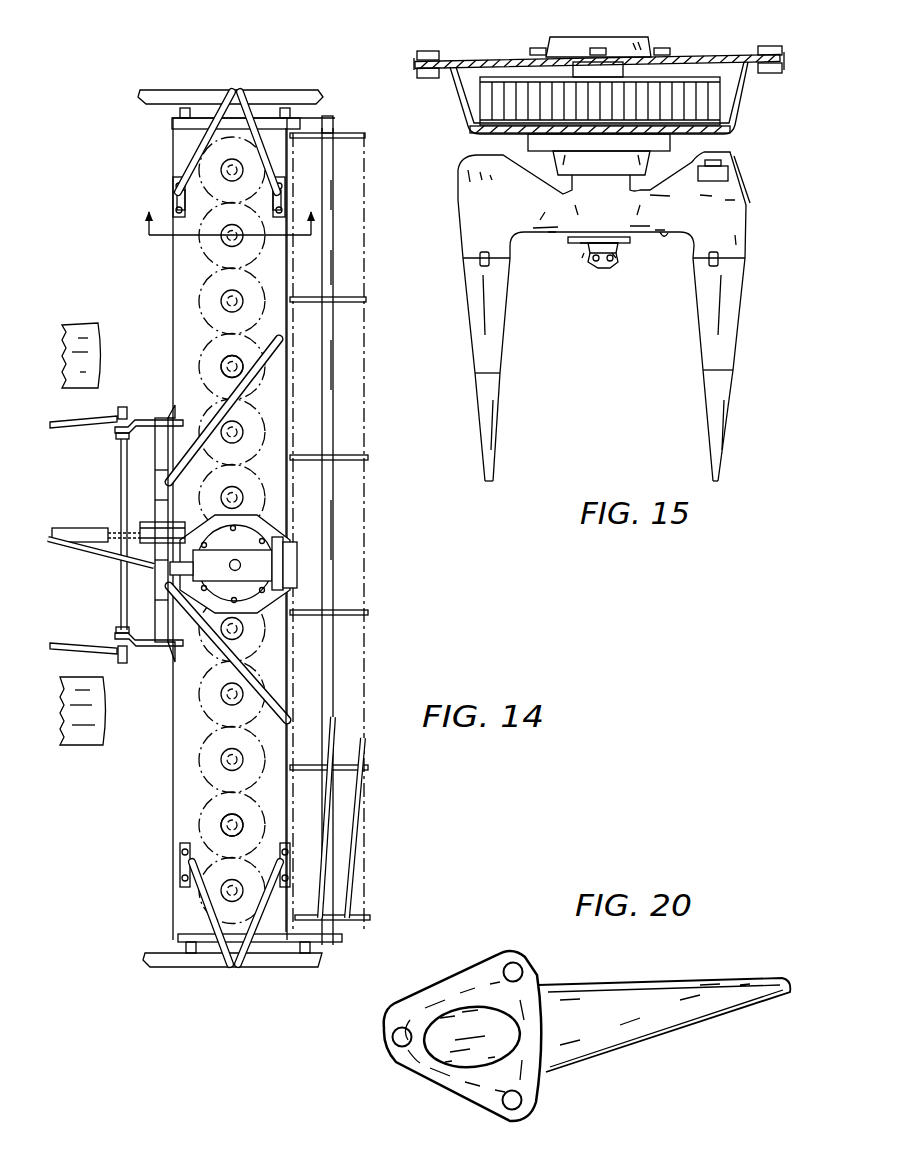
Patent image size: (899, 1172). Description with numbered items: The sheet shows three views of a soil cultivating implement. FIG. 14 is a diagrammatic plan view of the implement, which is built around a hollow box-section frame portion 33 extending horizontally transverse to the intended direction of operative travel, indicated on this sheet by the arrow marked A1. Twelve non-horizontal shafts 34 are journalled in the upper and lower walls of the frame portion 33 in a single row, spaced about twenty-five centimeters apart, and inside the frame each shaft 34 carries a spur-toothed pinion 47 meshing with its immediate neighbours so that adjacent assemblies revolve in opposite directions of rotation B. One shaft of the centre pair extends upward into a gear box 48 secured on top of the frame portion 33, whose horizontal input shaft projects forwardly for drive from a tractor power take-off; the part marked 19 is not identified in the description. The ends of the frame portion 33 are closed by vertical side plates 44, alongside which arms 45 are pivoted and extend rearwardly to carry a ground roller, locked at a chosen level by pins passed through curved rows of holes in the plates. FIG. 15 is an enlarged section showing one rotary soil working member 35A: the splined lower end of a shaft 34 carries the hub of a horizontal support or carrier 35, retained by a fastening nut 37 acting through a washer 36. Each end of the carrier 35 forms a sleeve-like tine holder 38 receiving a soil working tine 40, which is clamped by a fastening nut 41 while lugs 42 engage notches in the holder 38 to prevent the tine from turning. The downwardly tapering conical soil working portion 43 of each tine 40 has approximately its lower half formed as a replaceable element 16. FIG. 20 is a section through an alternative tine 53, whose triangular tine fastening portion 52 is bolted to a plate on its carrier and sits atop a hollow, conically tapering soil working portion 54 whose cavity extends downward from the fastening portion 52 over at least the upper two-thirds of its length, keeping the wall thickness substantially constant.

In FIG. 14, the replaceable element 16 is at (378, 627).
In FIG. 15, the replaceable element 16 is at (492, 442).
In FIG. 14, the vertical support bar 19 is at (158, 450).
In FIG. 14, the hollow box-section frame portion 33 is at (186, 698).
In FIG. 15, the hollow box-section frame portion 33 is at (454, 98).
In FIG. 14, the non-horizontal shaft 34 is at (224, 364).
In FIG. 15, the non-horizontal shaft 34 is at (616, 68).
In FIG. 15, the support or carrier 35 is at (668, 232).
In FIG. 15, the rotary soil working member 35A is at (614, 330).
In FIG. 15, the washer 36 is at (570, 243).
In FIG. 15, the fastening nut 37 is at (588, 260).
In FIG. 15, the sleeve-like tine holder 38 is at (470, 234).
In FIG. 15, the soil working tine 40 is at (499, 310).
In FIG. 15, the fastening nut 41 is at (733, 180).
In FIG. 15, the lugs 42 is at (482, 262).
In FIG. 15, the soil working portion 43 is at (469, 340).
In FIG. 14, the side plates 44 is at (172, 132).
In FIG. 14, the arms 45 is at (332, 112).
In FIG. 14, the pinion 47 is at (220, 290).
In FIG. 14, the gear box 48 is at (245, 556).
In FIG. 20, the tine fastening portion 52 is at (480, 972).
In FIG. 20, the tine 53 is at (670, 1034).
In FIG. 20, the soil working portion 54 is at (668, 996).
In FIG. 14, the direction of operative rotation B is at (205, 822).
In FIG. 14, the direction A1 is at (72, 792).